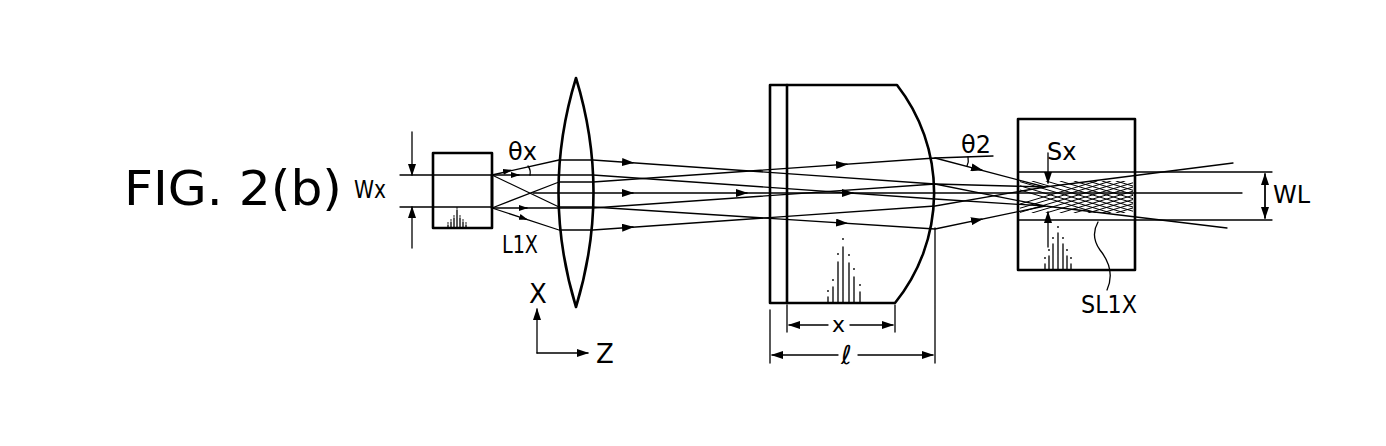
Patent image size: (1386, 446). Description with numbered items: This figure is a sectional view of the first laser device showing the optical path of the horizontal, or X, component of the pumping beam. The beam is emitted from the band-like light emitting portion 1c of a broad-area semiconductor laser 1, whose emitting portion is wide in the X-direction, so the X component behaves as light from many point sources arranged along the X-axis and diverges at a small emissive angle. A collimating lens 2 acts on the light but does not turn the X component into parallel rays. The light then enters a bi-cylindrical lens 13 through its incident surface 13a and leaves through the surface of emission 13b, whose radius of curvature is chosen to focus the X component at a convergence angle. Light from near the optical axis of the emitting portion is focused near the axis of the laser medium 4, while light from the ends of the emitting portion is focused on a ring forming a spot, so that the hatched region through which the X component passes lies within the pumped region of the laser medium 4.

The semiconductor laser 1 is at (473, 155).
The light emitting portion 1c is at (498, 222).
The collimating lens 2 is at (582, 97).
The bi-cylindrical lens 13 is at (854, 164).
The incident surface of the bi-cylindrical lens 13a is at (776, 105).
The surface of emission 13b is at (927, 123).
The laser medium 4 is at (1107, 119).